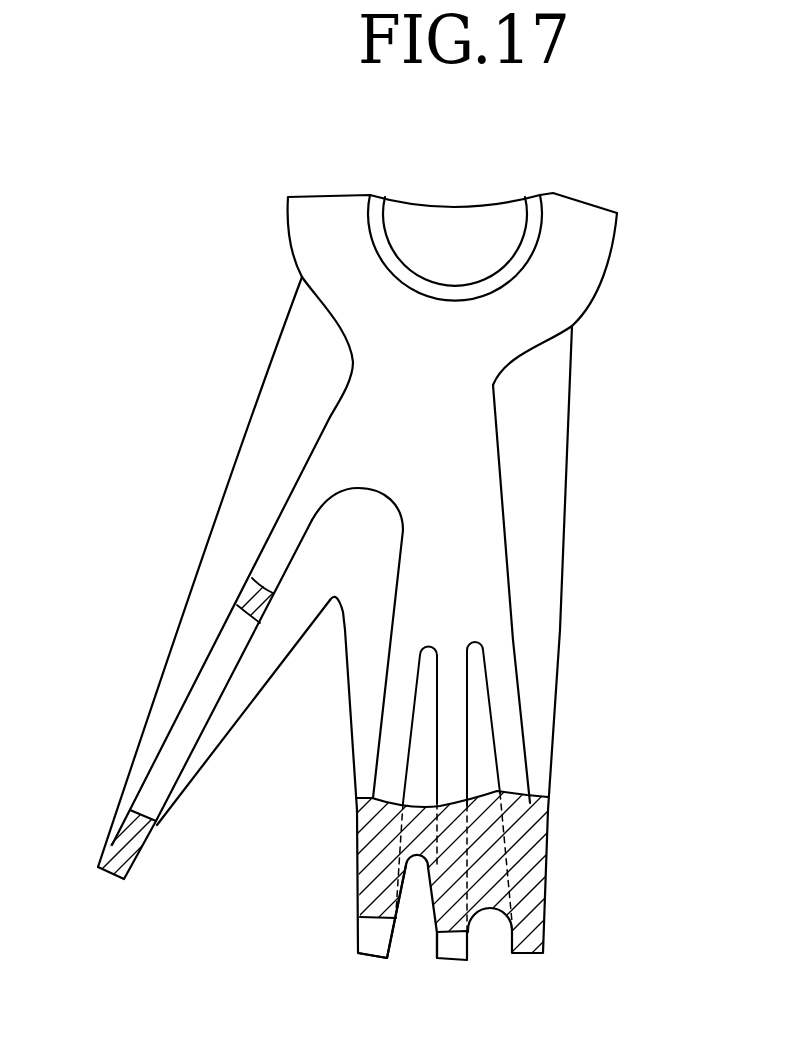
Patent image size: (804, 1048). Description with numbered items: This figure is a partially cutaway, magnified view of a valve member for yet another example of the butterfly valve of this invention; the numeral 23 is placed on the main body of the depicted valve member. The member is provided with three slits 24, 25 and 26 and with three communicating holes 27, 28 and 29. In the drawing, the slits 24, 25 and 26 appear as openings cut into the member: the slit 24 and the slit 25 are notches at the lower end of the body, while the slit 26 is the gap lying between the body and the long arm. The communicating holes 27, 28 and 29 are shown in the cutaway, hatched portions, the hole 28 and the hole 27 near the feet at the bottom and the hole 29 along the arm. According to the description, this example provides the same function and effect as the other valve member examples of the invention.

The body 23 is at (435, 423).
The slit 24 is at (490, 938).
The slit 25 is at (417, 933).
The slit 26 is at (268, 823).
The communicating hole 27 is at (455, 943).
The communicating hole 28 is at (365, 937).
The communicating hole 29 is at (160, 767).